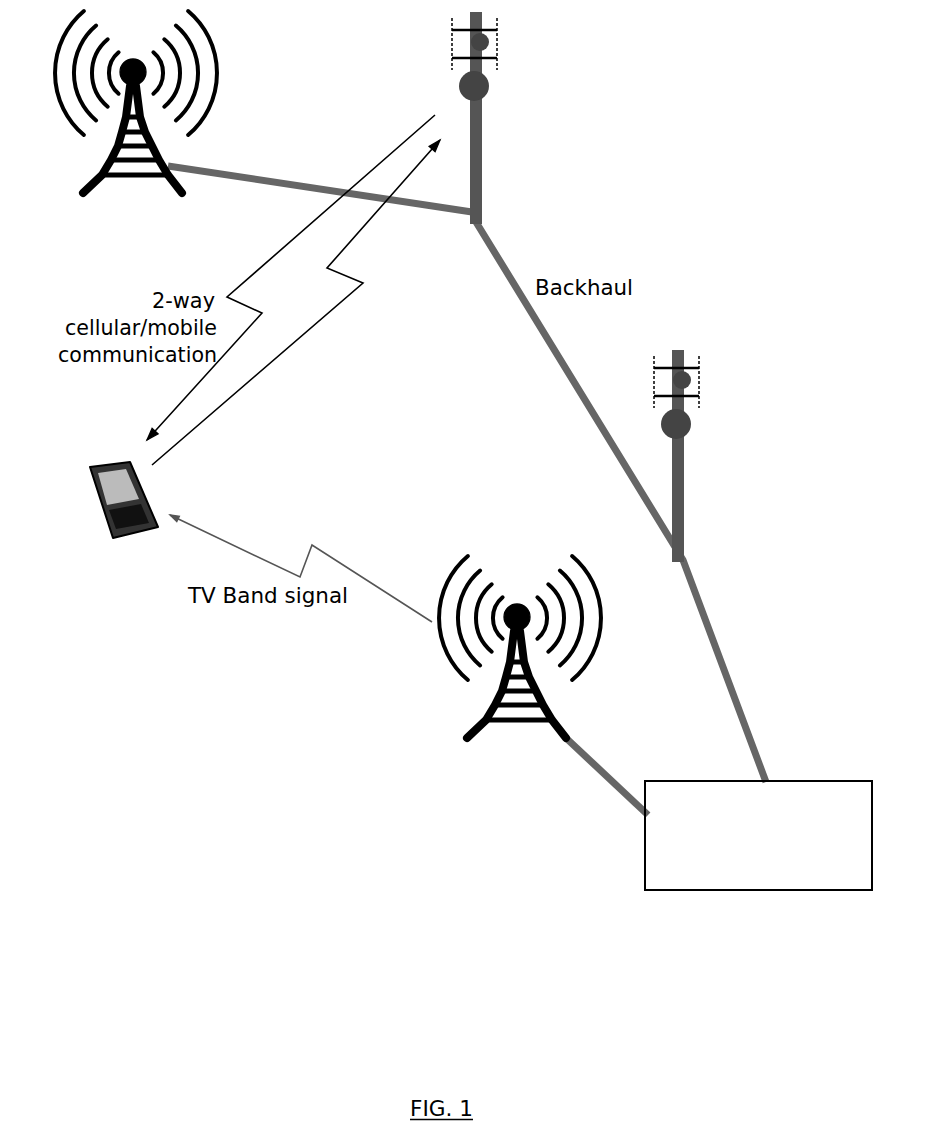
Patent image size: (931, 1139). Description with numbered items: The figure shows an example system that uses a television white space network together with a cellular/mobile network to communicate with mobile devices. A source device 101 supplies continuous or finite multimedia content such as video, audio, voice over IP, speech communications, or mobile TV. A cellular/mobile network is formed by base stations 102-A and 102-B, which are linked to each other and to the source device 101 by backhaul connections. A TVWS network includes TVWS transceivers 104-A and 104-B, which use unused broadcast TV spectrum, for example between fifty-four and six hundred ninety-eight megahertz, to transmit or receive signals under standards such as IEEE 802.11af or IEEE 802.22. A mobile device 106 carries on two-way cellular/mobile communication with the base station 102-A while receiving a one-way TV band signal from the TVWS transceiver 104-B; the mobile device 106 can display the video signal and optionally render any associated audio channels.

The TVWS transceiver 104-A is at (129, 134).
The TVWS transceiver 104-B is at (511, 682).
The base station 102-A is at (547, 118).
The base station 102-B is at (706, 456).
The mobile device 106 is at (124, 521).
The source device 101 is at (758, 835).